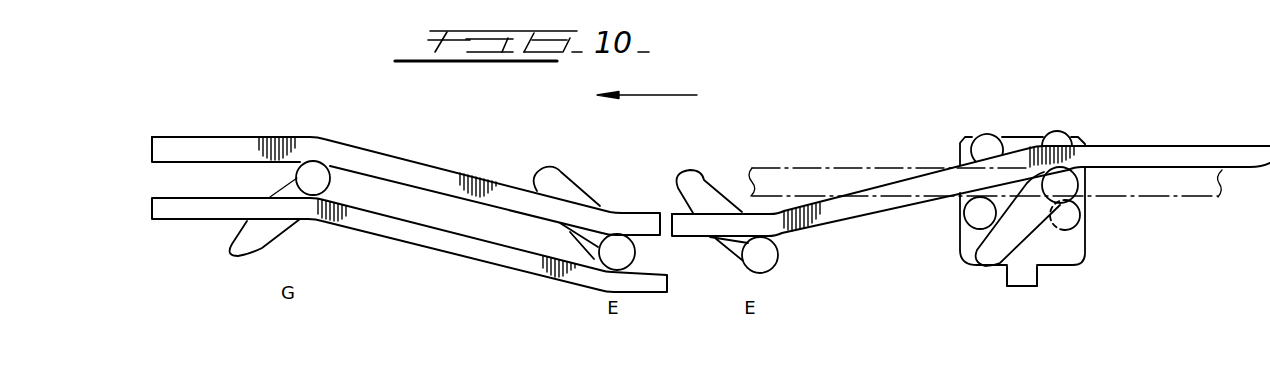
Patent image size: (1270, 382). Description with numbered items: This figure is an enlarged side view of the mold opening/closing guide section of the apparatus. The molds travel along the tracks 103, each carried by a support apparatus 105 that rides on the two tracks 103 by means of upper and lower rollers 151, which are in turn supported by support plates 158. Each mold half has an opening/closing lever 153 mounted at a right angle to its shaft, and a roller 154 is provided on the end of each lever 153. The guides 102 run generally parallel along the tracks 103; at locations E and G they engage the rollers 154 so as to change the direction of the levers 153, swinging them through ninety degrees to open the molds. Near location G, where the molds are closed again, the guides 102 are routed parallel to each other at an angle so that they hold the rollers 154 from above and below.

The guide 102 is at (427, 177).
The track 103 is at (820, 178).
The support apparatus 105 is at (1094, 287).
The roller 151 is at (1055, 140).
The opening/closing lever 153 is at (252, 248).
The roller 154 is at (313, 176).
The support plate 158 is at (1022, 287).